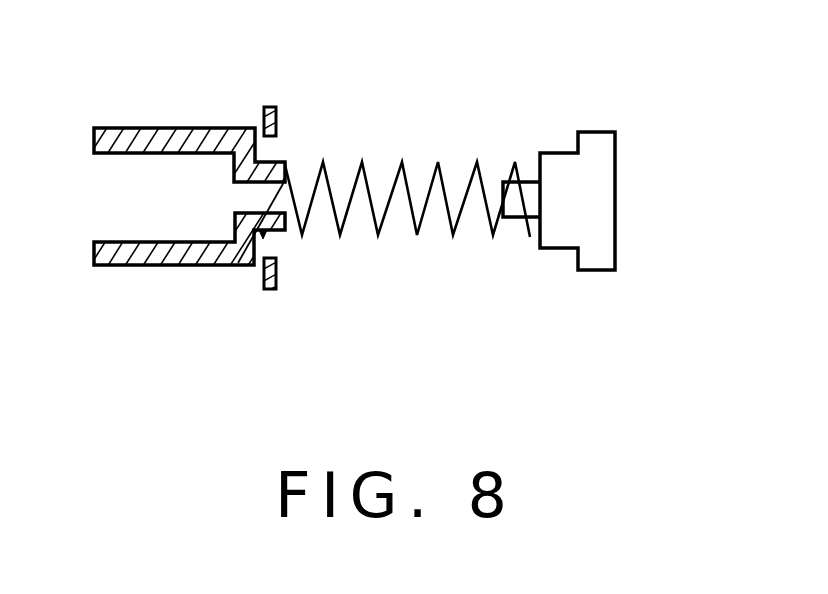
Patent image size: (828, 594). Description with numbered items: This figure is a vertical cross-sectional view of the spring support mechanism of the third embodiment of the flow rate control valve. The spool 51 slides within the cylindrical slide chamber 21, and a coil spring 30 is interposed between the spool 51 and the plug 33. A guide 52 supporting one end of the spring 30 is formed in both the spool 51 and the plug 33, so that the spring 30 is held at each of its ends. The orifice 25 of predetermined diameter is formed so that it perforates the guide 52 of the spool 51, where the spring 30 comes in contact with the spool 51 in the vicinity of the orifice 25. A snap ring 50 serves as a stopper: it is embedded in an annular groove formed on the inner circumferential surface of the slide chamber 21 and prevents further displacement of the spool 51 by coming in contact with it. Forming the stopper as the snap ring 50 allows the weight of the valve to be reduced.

The spool 51 is at (168, 128).
The orifice 25 is at (238, 196).
The guide 52 is at (414, 211).
The snap ring 50 is at (267, 290).
The slide chamber 21 is at (456, 163).
The coil spring 30 is at (407, 191).
The plug 33 is at (610, 168).